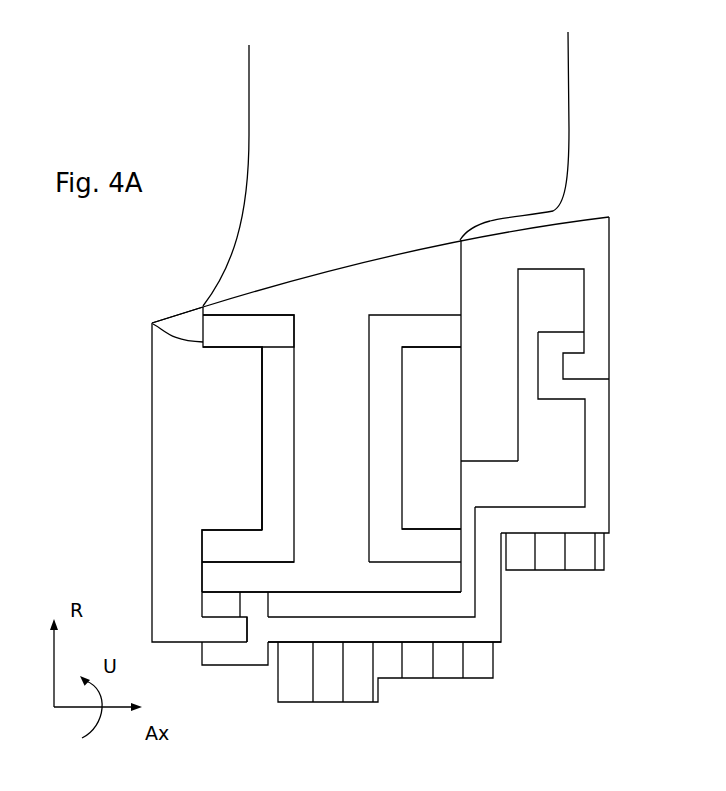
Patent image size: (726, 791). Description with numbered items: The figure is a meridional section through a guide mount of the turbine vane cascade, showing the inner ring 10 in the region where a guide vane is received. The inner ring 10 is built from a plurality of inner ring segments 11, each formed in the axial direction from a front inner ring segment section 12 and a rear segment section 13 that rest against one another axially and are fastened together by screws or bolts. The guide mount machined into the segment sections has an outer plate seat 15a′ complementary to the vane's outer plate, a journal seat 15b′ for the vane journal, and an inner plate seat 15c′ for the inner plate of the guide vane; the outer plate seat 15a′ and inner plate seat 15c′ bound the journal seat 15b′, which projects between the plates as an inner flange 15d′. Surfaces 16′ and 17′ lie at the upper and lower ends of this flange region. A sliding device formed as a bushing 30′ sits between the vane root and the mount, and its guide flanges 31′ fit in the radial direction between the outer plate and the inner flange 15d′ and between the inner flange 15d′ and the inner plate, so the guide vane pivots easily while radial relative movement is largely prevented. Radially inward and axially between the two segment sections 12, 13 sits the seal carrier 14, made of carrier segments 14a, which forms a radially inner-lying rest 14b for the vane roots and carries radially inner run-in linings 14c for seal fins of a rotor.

The inner ring 10 is at (139, 280).
The inner ring segment 11 is at (142, 517).
The front inner ring segment section 12 is at (152, 448).
The rear segment section 13 is at (603, 351).
The seal carrier 14 is at (497, 638).
The seal carrier segment 14a is at (351, 617).
The radially inner-lying rest 14b is at (240, 617).
The run-in lining 14c is at (590, 555).
The outer plate seat 15a′ is at (152, 323).
The journal seat 15b′ is at (262, 479).
The inner plate seat 15c′ is at (202, 578).
The inner flange 15d′ is at (253, 380).
The upper step surface 16′ is at (435, 347).
The lower step surface 17′ is at (442, 527).
The bushing 30′ is at (275, 398).
The guide flange 31′ is at (247, 344).